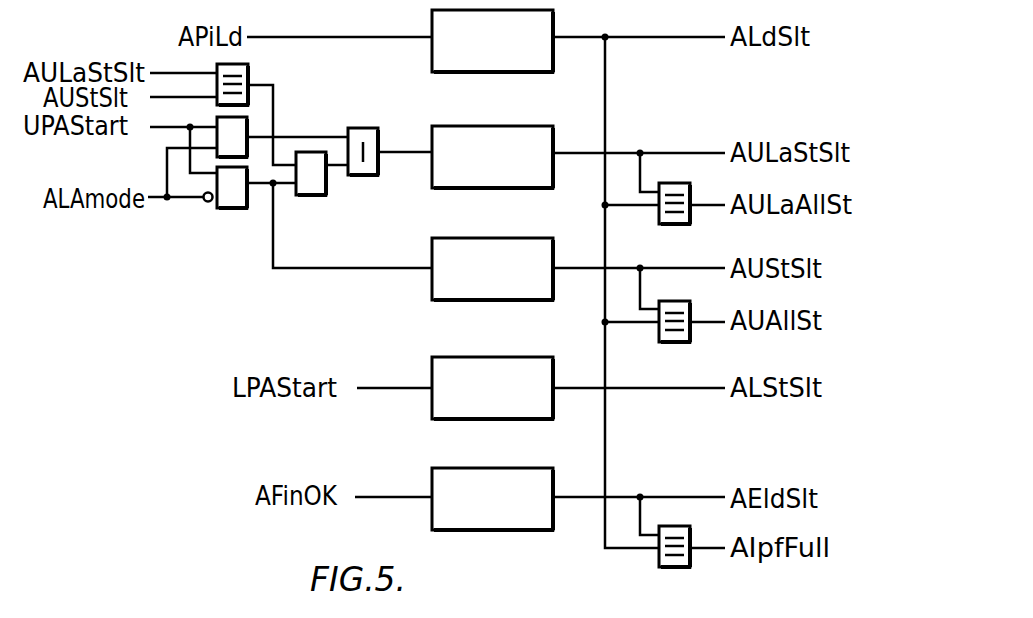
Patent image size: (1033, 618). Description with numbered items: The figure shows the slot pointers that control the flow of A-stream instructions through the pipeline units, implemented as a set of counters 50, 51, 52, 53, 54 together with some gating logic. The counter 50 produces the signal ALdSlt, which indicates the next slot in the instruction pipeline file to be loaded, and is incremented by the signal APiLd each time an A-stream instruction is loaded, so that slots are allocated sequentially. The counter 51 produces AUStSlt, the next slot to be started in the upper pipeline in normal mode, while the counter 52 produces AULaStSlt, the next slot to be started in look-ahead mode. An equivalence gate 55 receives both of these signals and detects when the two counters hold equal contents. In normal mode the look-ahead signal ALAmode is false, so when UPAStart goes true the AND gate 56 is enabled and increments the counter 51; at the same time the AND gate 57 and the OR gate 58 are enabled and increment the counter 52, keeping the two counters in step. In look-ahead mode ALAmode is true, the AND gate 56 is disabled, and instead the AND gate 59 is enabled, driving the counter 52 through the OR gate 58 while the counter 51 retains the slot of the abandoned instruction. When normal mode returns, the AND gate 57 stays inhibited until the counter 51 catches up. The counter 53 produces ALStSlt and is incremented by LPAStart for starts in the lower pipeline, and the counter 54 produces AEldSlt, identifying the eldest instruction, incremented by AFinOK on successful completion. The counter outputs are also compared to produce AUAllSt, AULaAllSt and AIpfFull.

The counter 50 is at (432, 52).
The counter 51 is at (554, 288).
The counter 52 is at (554, 172).
The counter 53 is at (554, 410).
The counter 54 is at (555, 513).
The equivalence gate 55 is at (250, 72).
The AND gate 56 is at (230, 210).
The AND gate 57 is at (308, 197).
The OR gate 58 is at (366, 177).
The AND gate 59 is at (249, 135).